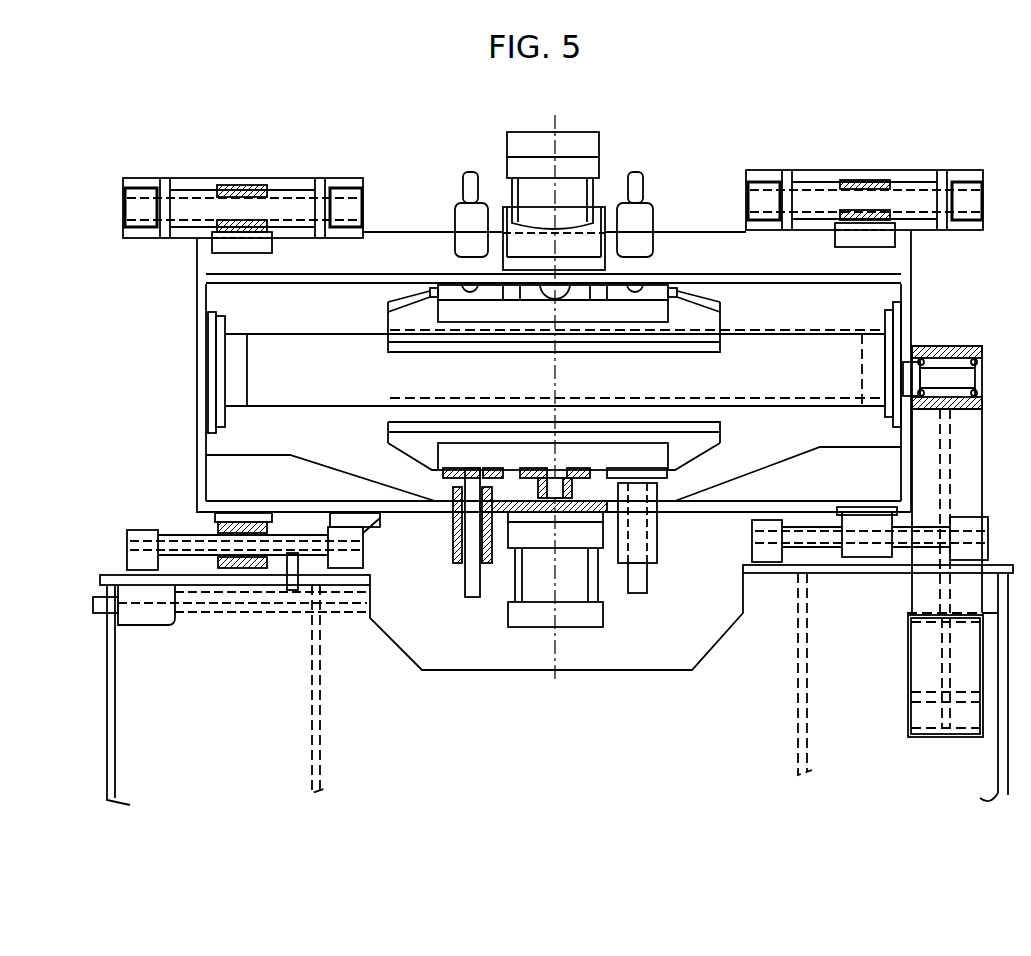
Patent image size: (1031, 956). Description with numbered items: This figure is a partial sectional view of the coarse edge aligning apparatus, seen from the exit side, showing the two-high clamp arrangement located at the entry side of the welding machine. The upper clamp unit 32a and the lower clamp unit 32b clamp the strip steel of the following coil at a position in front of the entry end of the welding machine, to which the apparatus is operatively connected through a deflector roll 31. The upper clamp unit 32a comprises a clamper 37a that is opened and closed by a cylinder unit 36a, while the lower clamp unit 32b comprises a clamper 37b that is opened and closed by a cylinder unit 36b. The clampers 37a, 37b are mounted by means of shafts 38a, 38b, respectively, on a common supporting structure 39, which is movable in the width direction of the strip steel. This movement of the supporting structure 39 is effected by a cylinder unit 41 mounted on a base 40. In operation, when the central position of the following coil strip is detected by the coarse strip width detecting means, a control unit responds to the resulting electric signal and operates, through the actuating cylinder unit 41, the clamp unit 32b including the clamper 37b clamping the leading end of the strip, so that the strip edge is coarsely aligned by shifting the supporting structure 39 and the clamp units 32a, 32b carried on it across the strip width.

The deflector roll 31 is at (781, 383).
The upper clamp unit 32a is at (798, 312).
The lower clamp unit 32b is at (776, 462).
The cylinder unit 36a is at (573, 192).
The cylinder unit 36b is at (567, 595).
The clamper 37a is at (387, 338).
The clamper 37b is at (388, 437).
The shaft 38a is at (299, 200).
The shaft 38b is at (190, 545).
The supporting structure 39 is at (200, 441).
The base 40 is at (400, 648).
The cylinder unit 41 is at (308, 566).